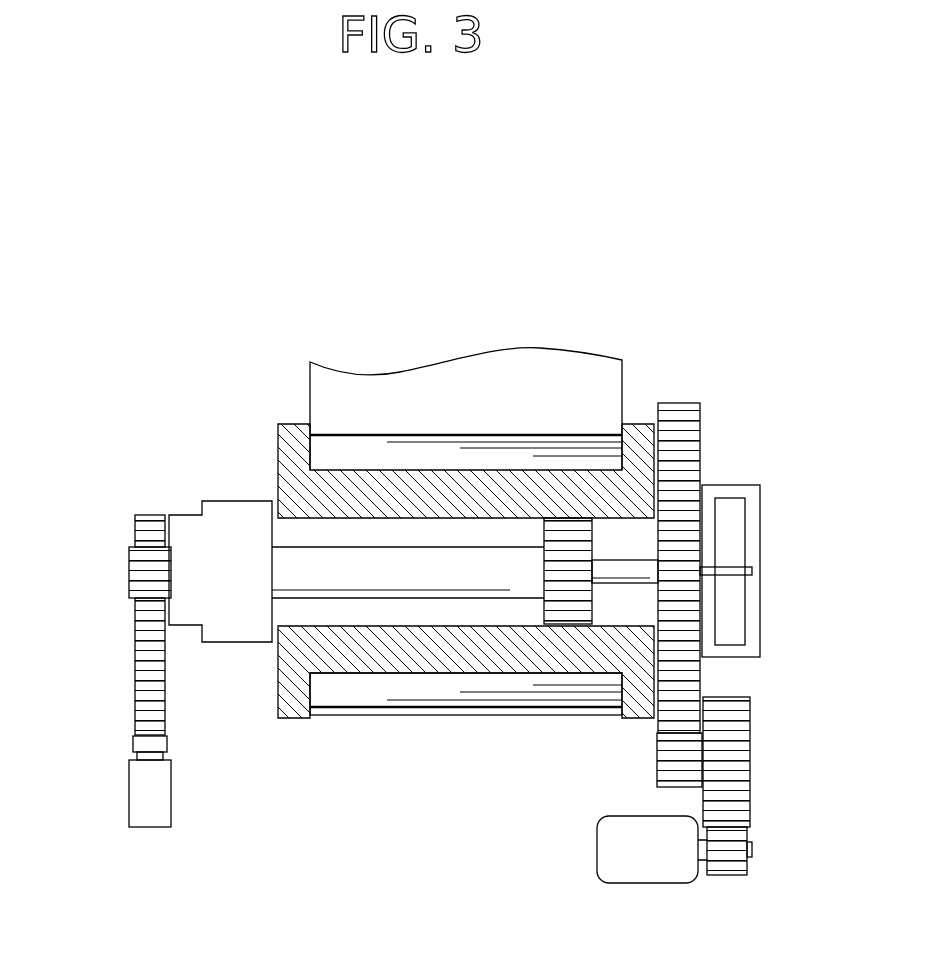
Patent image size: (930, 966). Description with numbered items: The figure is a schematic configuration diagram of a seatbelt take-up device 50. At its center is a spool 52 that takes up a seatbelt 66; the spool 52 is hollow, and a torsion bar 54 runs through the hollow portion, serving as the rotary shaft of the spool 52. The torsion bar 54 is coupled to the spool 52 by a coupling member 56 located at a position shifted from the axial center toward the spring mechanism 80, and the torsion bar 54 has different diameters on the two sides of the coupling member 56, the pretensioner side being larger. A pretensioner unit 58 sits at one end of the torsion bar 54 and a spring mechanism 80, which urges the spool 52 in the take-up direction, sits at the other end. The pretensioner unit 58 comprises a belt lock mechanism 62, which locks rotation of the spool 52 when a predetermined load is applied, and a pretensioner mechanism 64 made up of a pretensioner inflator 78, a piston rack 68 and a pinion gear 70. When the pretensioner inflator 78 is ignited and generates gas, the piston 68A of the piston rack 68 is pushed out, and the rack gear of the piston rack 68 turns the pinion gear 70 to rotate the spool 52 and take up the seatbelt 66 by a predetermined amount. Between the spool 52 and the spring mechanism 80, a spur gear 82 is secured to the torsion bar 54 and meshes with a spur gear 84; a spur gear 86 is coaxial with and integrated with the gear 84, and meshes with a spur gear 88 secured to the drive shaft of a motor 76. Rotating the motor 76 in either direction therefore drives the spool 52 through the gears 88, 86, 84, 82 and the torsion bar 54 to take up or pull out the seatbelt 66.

The seatbelt take-up device 50 is at (216, 178).
The spool 52 is at (290, 424).
The torsion bar 54 is at (604, 560).
The coupling member 56 is at (583, 602).
The pretensioner unit 58 is at (108, 407).
The belt lock mechanism 62 is at (225, 500).
The pretensioner mechanism 64 is at (151, 498).
The seatbelt 66 is at (543, 362).
The piston rack 68 is at (135, 690).
The piston 68A is at (133, 745).
The pinion gear 70 is at (135, 568).
The motor 76 is at (610, 852).
The pretensioner inflator 78 is at (135, 808).
The spring mechanism 80 is at (742, 505).
The spur gear 82 is at (672, 403).
The spur gear 84 is at (658, 770).
The spur gear 86 is at (750, 727).
The spur gear 88 is at (732, 877).